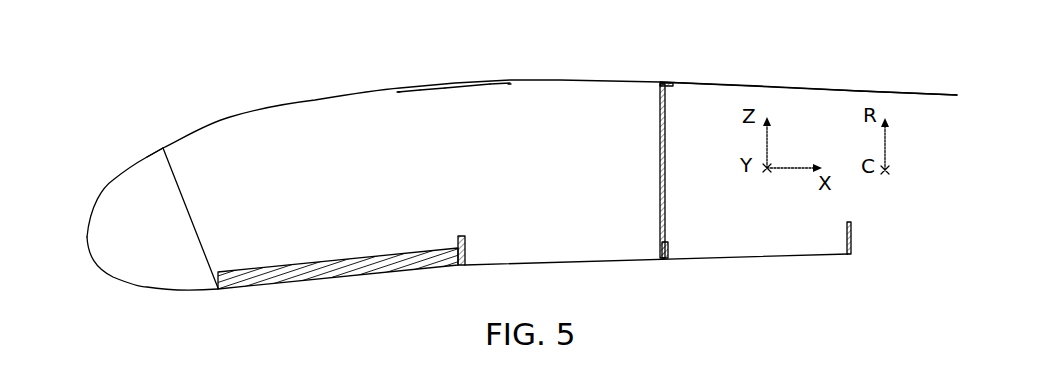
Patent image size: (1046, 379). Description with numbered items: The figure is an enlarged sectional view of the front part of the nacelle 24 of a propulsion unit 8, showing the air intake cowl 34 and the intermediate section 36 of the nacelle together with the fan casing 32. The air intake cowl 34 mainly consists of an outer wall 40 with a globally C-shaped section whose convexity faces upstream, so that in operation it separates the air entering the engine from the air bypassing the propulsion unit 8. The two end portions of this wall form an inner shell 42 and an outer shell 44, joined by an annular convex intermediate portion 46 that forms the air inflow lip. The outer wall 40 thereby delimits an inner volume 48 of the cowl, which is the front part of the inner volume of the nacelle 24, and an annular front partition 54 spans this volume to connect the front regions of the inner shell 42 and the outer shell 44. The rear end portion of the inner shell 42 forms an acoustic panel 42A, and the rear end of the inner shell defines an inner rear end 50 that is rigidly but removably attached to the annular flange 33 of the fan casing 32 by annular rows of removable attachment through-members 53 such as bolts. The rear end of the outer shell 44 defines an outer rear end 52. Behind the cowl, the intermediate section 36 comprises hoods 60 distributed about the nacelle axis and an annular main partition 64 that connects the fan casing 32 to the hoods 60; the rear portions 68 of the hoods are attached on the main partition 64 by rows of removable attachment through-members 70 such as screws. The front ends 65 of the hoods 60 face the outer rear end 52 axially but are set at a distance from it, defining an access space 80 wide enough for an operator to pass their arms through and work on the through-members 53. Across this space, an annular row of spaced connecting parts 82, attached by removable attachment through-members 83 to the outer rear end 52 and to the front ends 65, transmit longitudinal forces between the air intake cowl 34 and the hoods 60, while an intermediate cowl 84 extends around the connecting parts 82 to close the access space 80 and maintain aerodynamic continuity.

The propulsion unit 8 is at (100, 106).
The nacelle 24 is at (308, 93).
The outer shell 44 is at (230, 117).
The air intake cowl 34 is at (152, 152).
The outer wall 40 is at (130, 210).
The intermediate portion 46 is at (88, 243).
The front partition 54 is at (195, 232).
The inner volume 48 is at (330, 189).
The inner shell 42 is at (340, 271).
The acoustic panel 42A is at (318, 273).
The inner rear end 50 is at (429, 278).
The removable attachment through-members 53 is at (455, 258).
The fan casing 32 is at (658, 278).
The annular flange 33 is at (590, 262).
The intermediate cowl 84 is at (440, 85).
The outer rear end 52 is at (405, 87).
The front ends 65 is at (505, 80).
The removable attachment through-members 83 is at (397, 95).
The connecting parts 82 is at (420, 90).
The access space 80 is at (478, 87).
The main partition 64 is at (677, 144).
The removable attachment through-members 70 is at (660, 110).
The hoods 60 is at (760, 62).
The intermediate section 36 is at (740, 82).
The rear portions 68 is at (928, 90).